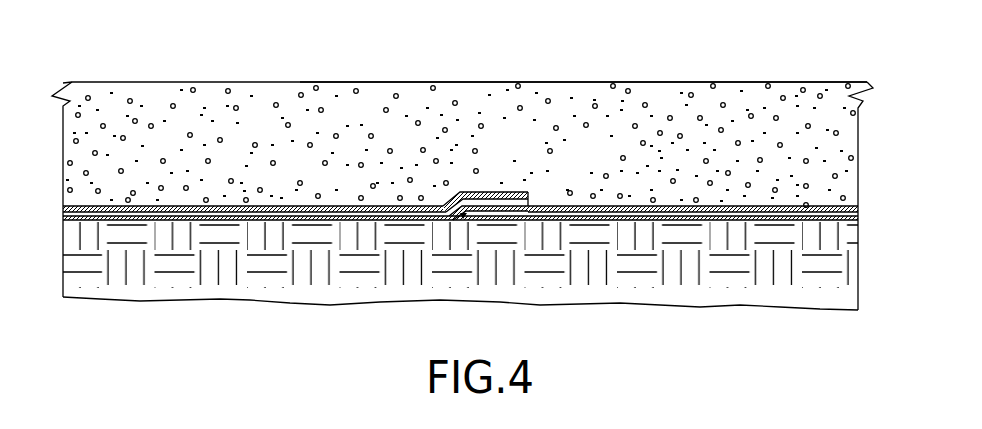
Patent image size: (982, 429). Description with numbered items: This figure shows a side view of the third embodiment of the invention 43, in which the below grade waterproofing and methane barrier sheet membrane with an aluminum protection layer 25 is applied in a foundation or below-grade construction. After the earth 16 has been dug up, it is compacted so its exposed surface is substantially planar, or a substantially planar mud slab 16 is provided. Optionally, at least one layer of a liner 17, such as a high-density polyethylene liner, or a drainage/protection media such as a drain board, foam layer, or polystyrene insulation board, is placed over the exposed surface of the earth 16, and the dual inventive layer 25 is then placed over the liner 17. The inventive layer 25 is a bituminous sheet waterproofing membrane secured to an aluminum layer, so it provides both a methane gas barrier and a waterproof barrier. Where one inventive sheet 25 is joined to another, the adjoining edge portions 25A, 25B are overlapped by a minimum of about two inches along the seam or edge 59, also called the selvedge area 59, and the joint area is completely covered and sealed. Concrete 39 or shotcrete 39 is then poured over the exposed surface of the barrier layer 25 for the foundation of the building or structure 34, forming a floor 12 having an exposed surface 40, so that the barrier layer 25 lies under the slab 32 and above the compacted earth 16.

The floor 12 is at (307, 82).
The earth 16 is at (285, 302).
The liner 17 is at (372, 222).
The waterproofing and methane barrier sheet membrane with aluminum protection layer 25 is at (235, 206).
The edge portion 25A is at (508, 217).
The edge portion 25B is at (487, 190).
The slab 32 is at (668, 97).
The building or structure 34 is at (374, 101).
The concrete 39 is at (161, 98).
The exposed surface 40 is at (546, 80).
The third embodiment of the invention 43 is at (784, 63).
The edge 59 is at (536, 201).